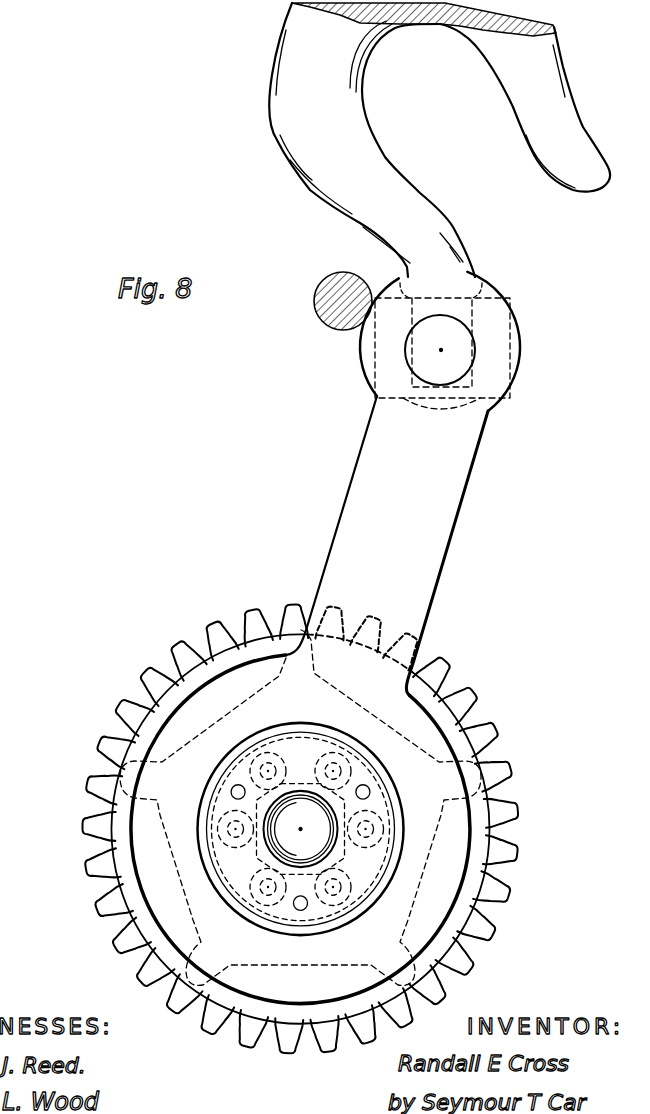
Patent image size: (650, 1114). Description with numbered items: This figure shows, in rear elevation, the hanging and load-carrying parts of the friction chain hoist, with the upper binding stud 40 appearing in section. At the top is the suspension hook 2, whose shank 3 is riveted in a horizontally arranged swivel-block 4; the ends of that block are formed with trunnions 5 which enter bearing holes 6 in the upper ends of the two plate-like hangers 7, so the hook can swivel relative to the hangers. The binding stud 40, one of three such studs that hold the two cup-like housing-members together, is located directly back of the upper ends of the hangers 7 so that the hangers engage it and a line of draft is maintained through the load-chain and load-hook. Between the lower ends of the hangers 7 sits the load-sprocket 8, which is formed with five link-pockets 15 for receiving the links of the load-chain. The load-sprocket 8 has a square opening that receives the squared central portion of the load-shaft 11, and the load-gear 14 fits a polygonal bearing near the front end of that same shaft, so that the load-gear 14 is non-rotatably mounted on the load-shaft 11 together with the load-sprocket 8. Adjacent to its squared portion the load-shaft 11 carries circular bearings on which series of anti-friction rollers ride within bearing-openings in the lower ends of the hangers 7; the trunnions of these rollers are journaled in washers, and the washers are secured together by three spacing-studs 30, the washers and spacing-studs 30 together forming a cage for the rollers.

The top or suspension hook 2 is at (439, 140).
The shank 3 is at (441, 346).
The swivel-block 4 is at (442, 348).
The trunnions 5 is at (440, 350).
The bearing holes 6 is at (407, 365).
The hangers 7 is at (403, 484).
The load-sprocket 8 is at (232, 633).
The load-shaft 11 is at (308, 838).
The load-gear 14 is at (446, 665).
The link-pockets 15 is at (277, 967).
The spacing-studs 30 is at (231, 790).
The upper binding stud 40 is at (325, 322).